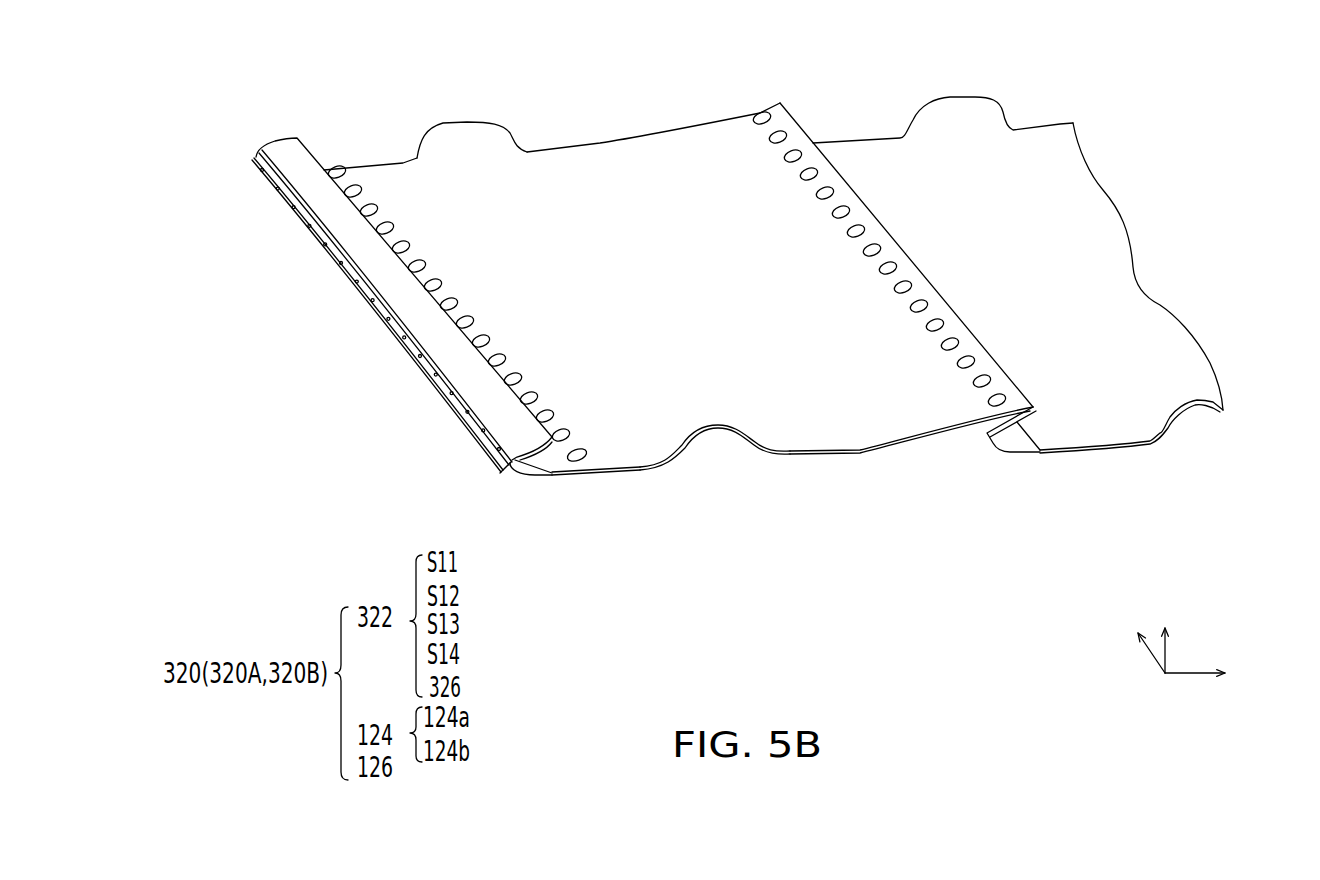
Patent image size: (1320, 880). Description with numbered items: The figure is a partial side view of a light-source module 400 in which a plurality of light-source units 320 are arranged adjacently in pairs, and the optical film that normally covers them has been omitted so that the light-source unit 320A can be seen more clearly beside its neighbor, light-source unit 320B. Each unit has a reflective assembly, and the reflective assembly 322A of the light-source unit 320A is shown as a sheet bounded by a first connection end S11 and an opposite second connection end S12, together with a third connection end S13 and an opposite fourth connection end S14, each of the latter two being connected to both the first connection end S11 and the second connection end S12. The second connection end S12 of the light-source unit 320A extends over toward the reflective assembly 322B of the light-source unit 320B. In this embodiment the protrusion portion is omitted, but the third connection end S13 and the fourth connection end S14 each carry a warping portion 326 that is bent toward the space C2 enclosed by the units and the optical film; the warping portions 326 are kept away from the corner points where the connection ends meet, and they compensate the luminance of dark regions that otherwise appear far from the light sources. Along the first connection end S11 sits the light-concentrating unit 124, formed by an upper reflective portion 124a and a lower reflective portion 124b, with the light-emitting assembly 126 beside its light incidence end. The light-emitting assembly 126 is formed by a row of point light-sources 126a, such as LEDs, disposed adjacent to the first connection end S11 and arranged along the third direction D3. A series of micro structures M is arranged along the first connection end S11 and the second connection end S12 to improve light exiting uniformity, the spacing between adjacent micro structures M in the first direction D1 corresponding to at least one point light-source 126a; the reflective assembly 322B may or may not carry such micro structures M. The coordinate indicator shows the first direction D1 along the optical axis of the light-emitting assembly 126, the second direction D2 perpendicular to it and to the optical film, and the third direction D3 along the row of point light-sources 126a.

The light-source module 400 is at (774, 283).
The light-source unit 320 is at (729, 283).
The light-source unit 320A is at (634, 283).
The light-source unit 320B is at (1018, 283).
The reflective assembly 322A is at (678, 298).
The reflective assembly 322B is at (1018, 330).
The warping portion 326 is at (445, 114).
The first connection end S11 is at (550, 478).
The second connection end S12 is at (1036, 403).
The third connection end S13 is at (636, 470).
The fourth connection end S14 is at (668, 135).
The light-concentrating unit 124 is at (394, 304).
The upper reflective portion 124a is at (292, 147).
The lower reflective portion 124b is at (532, 480).
The light-emitting assembly 126 is at (381, 327).
The point light-source 126a is at (484, 436).
The micro structure M is at (582, 460).
The space C2 is at (708, 228).
The first direction D1 is at (1210, 677).
The second direction D2 is at (1165, 632).
The third direction D3 is at (1140, 635).